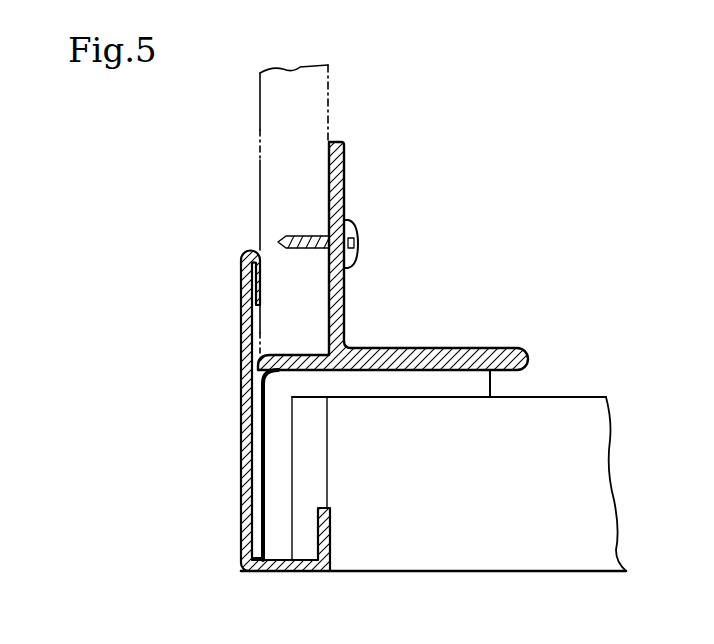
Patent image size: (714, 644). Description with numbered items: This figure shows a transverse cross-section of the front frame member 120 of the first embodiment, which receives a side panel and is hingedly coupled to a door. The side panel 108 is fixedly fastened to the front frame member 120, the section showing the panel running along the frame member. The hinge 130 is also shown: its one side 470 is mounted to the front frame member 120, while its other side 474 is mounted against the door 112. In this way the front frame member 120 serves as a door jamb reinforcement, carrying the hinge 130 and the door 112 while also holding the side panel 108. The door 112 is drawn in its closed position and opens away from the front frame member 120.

The side panel 108 is at (270, 120).
The front frame member 120 is at (502, 339).
The door 112 is at (538, 474).
The other side of the hinge 474 is at (316, 461).
The one side of the hinge 470 is at (278, 550).
The hinge 130 is at (305, 565).